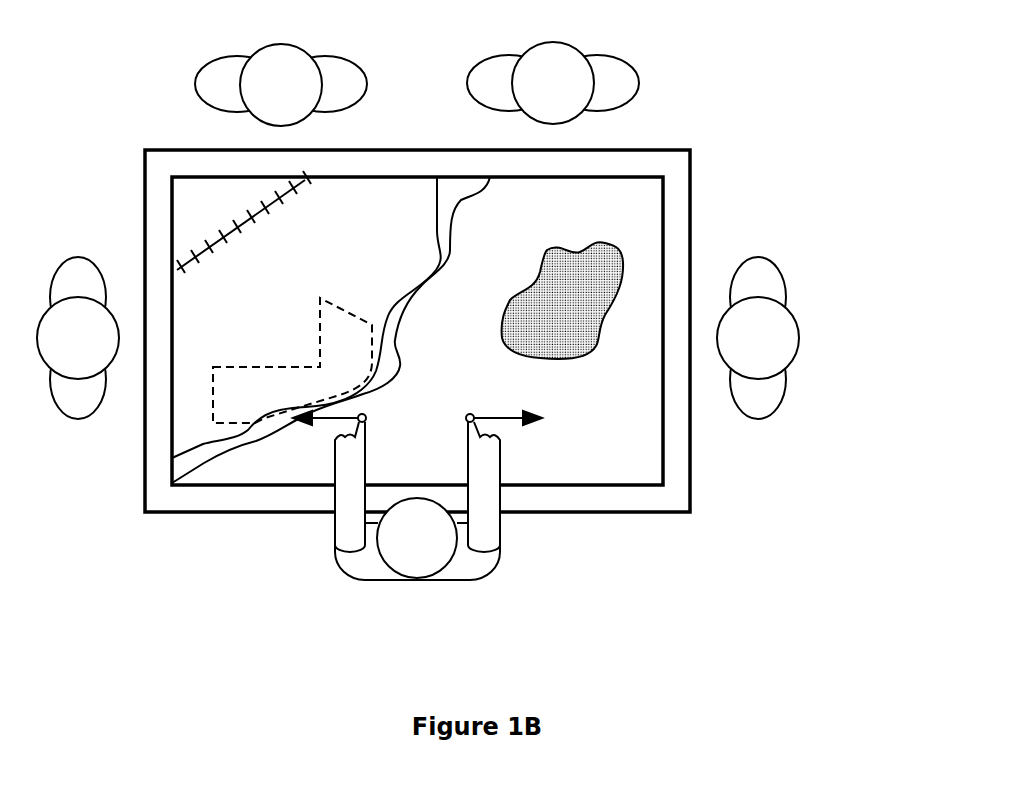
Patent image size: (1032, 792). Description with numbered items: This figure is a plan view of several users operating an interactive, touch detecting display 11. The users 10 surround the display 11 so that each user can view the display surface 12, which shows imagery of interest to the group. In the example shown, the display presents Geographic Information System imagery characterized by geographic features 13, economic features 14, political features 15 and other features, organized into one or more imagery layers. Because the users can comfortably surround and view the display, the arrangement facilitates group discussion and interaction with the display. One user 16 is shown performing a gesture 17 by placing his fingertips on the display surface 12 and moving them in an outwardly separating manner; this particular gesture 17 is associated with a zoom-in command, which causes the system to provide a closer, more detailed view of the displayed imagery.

The users 10 is at (812, 338).
The interactive, touch detecting display 11 is at (698, 180).
The display surface 12 is at (608, 458).
The geographic features 13 is at (575, 358).
The economic features 14 is at (245, 232).
The political features 15 is at (295, 363).
The user 16 is at (418, 592).
The gesture 17 is at (505, 410).